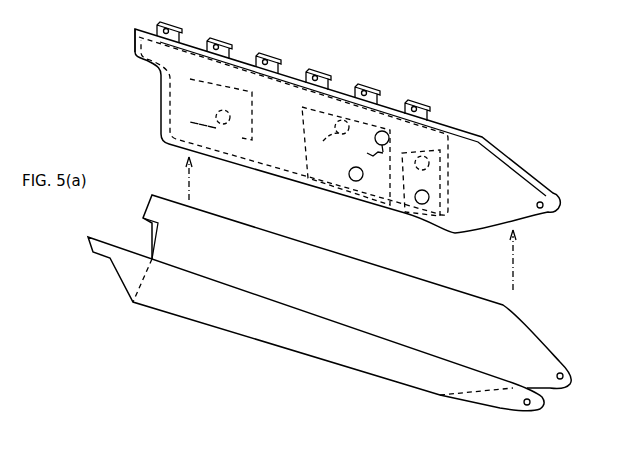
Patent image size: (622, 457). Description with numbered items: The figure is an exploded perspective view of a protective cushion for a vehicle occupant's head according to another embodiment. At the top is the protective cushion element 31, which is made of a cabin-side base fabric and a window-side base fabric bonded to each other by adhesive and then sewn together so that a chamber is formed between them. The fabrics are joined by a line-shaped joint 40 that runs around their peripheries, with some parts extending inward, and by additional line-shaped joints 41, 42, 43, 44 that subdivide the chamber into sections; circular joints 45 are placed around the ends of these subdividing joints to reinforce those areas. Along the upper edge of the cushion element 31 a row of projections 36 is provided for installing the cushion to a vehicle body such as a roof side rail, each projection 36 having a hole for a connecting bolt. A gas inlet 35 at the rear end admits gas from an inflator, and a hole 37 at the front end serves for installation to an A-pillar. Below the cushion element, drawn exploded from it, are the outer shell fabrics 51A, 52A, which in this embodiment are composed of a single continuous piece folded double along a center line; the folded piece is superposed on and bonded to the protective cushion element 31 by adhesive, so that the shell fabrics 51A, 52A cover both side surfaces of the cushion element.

The protective cushion element 31 is at (508, 139).
The gas inlet 35 is at (132, 42).
The projections 36 is at (265, 54).
The holes 37 is at (553, 190).
The line-shaped joint 40 is at (163, 105).
The line-shaped joint 41 is at (221, 109).
The line-shaped joint 42 is at (346, 156).
The line-shaped joint 43 is at (367, 145).
The line-shaped joint 44 is at (425, 171).
The circular joints 45 is at (383, 131).
The outer shell fabric 51A is at (233, 307).
The outer shell fabric 52A is at (505, 343).